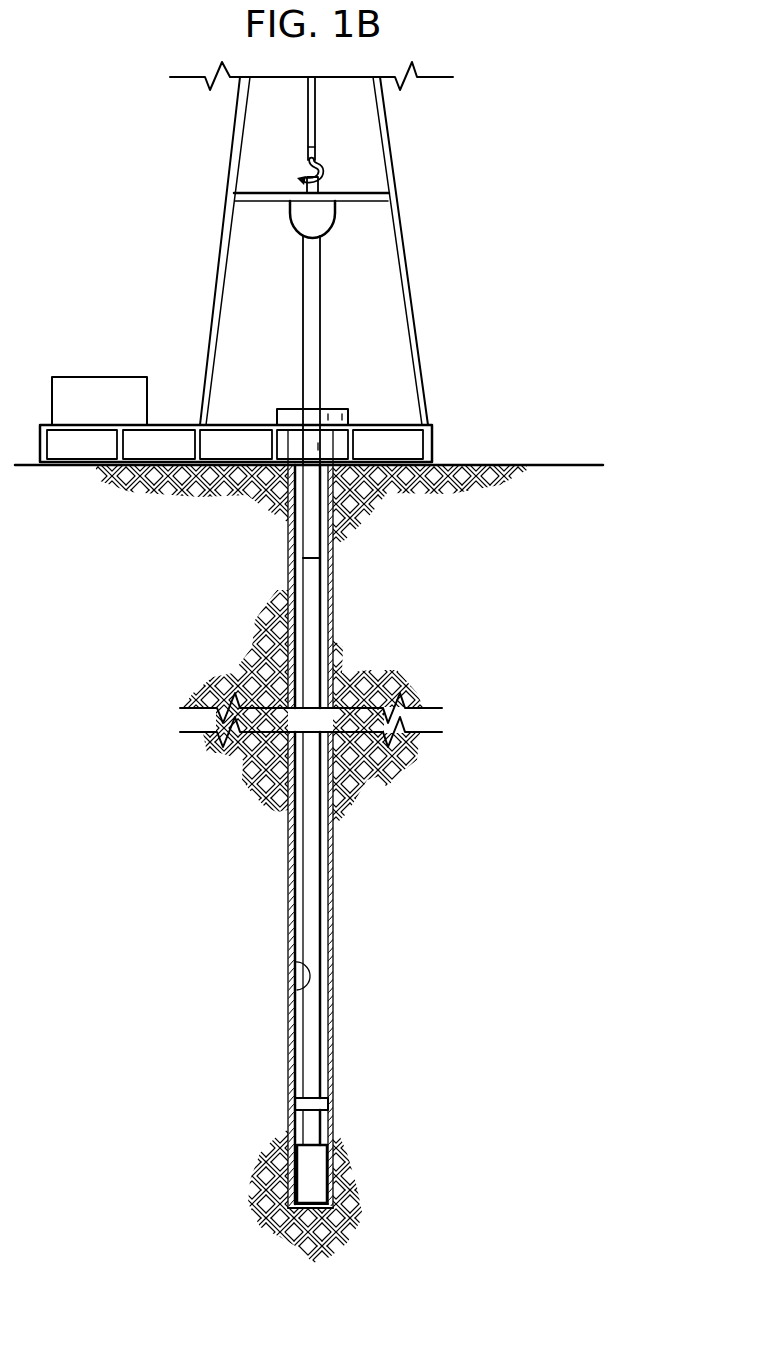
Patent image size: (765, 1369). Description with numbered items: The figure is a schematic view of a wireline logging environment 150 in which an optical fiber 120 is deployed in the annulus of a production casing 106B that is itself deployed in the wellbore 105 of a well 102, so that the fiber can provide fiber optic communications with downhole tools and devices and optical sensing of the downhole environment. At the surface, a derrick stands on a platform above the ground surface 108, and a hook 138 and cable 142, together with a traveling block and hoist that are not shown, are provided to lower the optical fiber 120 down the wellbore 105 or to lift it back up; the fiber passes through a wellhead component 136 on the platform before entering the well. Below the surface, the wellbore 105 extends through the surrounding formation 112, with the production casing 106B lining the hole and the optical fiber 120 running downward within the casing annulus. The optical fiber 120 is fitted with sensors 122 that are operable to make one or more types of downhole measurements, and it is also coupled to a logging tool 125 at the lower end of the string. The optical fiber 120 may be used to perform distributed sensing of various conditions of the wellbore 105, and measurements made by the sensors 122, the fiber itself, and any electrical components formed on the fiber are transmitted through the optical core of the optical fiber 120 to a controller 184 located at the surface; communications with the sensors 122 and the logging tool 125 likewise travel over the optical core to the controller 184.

The wireline logging environment 150 is at (153, 225).
The cable 142 is at (306, 134).
The hook 138 is at (329, 176).
The controller 184 is at (100, 376).
The wellhead / rotary table 136 is at (290, 408).
The well 102 is at (343, 394).
The surface 108 is at (537, 464).
The formation 112 is at (453, 872).
The production casing 106B is at (287, 862).
The optical fiber 120 is at (322, 895).
The wellbore 105 is at (293, 963).
The sensors 122 is at (320, 1103).
The logging tool 125 is at (313, 1172).